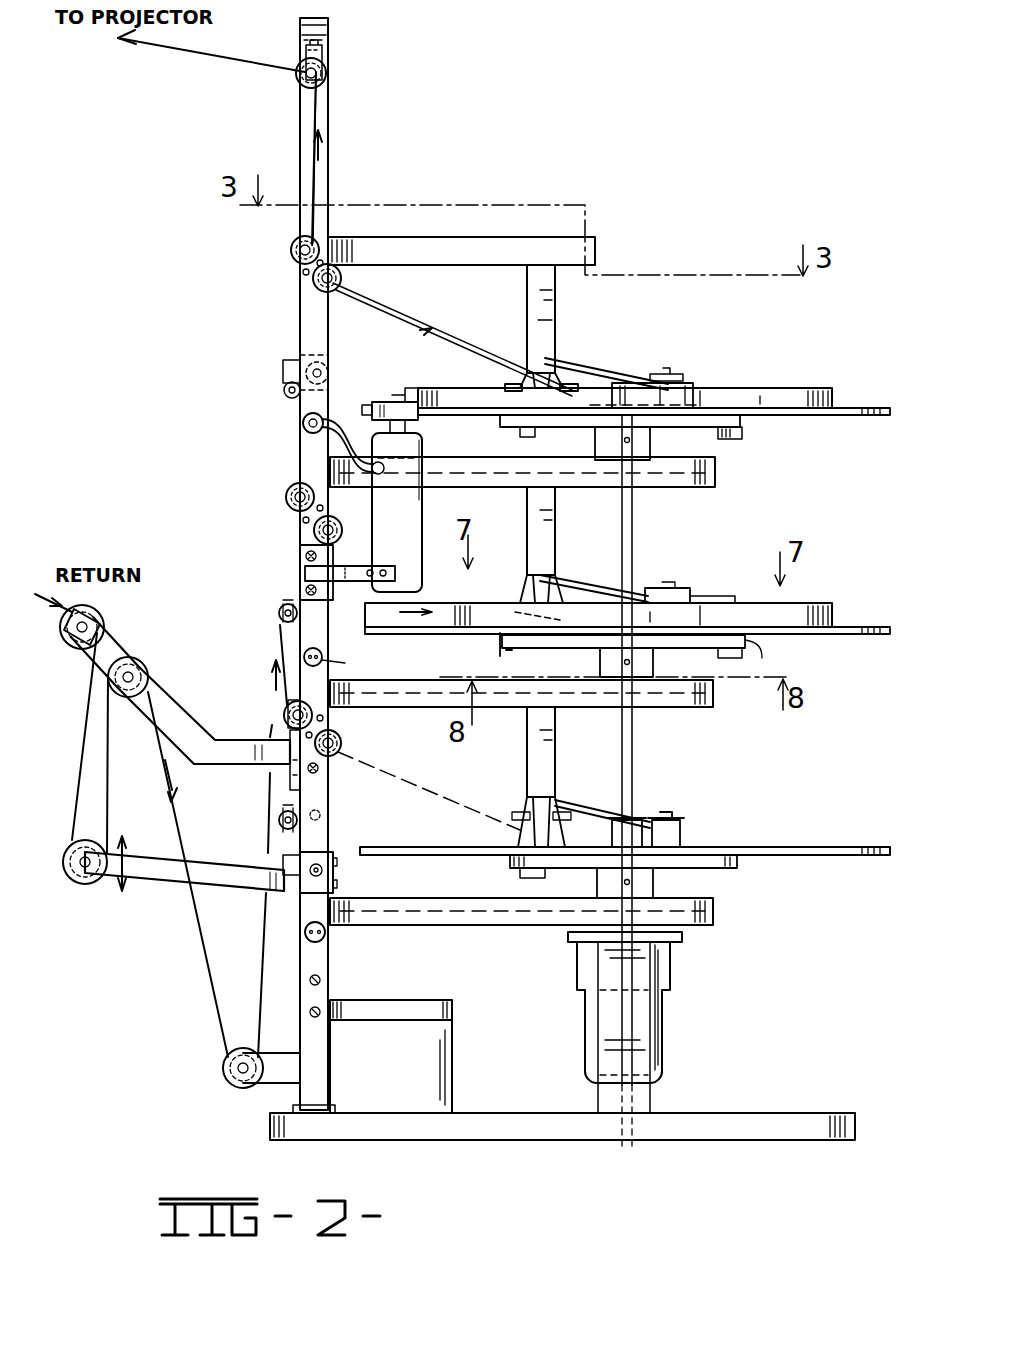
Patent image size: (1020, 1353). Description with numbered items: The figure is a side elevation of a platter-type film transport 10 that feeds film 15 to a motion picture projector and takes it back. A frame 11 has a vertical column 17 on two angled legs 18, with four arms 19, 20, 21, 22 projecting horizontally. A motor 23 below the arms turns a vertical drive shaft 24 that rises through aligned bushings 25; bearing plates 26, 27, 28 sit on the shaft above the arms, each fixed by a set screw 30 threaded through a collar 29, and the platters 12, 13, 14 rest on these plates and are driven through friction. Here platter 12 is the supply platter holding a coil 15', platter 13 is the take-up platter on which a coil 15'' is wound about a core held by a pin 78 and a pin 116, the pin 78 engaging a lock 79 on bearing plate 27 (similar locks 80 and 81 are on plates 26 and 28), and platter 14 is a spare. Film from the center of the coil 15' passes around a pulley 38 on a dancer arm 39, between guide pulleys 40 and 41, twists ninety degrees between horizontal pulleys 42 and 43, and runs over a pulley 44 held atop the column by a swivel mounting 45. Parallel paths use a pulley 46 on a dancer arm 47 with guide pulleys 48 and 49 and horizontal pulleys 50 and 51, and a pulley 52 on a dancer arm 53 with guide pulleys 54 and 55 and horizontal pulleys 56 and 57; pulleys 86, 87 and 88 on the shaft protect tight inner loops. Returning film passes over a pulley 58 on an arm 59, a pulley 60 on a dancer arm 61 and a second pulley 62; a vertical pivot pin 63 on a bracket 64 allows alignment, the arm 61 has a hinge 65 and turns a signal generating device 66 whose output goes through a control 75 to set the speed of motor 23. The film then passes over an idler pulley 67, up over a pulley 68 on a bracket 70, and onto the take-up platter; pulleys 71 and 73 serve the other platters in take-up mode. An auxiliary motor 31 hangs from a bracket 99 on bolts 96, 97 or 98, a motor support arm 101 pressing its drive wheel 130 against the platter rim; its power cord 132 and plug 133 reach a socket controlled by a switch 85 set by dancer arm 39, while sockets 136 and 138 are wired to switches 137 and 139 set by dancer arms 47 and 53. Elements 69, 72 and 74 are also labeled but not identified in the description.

The film transport 10 is at (539, 87).
The frame 11 is at (340, 172).
The platter 12 is at (840, 415).
The platter 13 is at (845, 635).
The platter 14 is at (815, 856).
The film 15 is at (175, 543).
The coil 15' is at (636, 372).
The coil 15'' is at (623, 604).
The column 17 is at (298, 300).
The angled legs 18 is at (505, 1140).
The arm 19 is at (595, 240).
The arm 20 is at (715, 485).
The arm 21 is at (713, 700).
The arm 22 is at (713, 923).
The motor 23 is at (662, 1030).
The vertical drive shaft 24 is at (634, 755).
The bushings 25 is at (630, 468).
The bearing plate 26 is at (516, 430).
The bearing plate 27 is at (548, 650).
The bearing plate 28 is at (732, 868).
The collar 29 is at (652, 442).
The set screw 30 is at (595, 440).
The auxiliary motor 31 is at (422, 492).
The pulley 38 is at (690, 385).
The dancer arm 39 is at (556, 370).
The guide pulley 40 is at (512, 383).
The guide pulley 41 is at (580, 366).
The horizontal pulley 42 is at (342, 281).
The horizontal pulley 43 is at (291, 253).
The pulley 44 is at (300, 85).
The swivel mounting 45 is at (328, 30).
The pulley 46 is at (705, 596).
The dancer arm 47 is at (582, 575).
The guide pulley 48 is at (515, 600).
The guide pulley 49 is at (560, 618).
The horizontal pulley 50 is at (360, 510).
The horizontal pulley 51 is at (285, 490).
The pulley 52 is at (684, 828).
The dancer arm 53 is at (588, 798).
The guide pulley 54 is at (518, 820).
The guide pulley 55 is at (565, 826).
The horizontal pulley 56 is at (341, 735).
The horizontal pulley 57 is at (287, 704).
The pulley 58 is at (100, 615).
The arm 59 is at (225, 765).
The pulley 60 is at (78, 878).
The dancer arm 61 is at (142, 882).
The pulley 62 is at (140, 660).
The vertical pivot pin 63 is at (287, 716).
The bracket 64 is at (290, 780).
The hinge 65 is at (280, 860).
The signal generating device 66 is at (310, 890).
The idler pulley 67 is at (232, 1082).
The pulley 68 is at (280, 608).
The clamp 69 is at (323, 650).
The bracket 70 is at (298, 570).
The pulley 71 is at (284, 396).
The roller 72 is at (330, 368).
The pulley 73 is at (278, 822).
The bolt 74 is at (322, 812).
The control 75 is at (452, 1042).
The pin 78 is at (765, 650).
The lock 79 is at (742, 656).
The lock 80 is at (740, 440).
The lock 81 is at (520, 873).
The switch 85 is at (555, 302).
The pulley 86 is at (645, 375).
The pulley 87 is at (650, 588).
The pulley 88 is at (648, 815).
The pair of bolts 96 is at (305, 552).
The pair of bolts 97 is at (320, 770).
The pair of bolts 98 is at (322, 1010).
The bracket 99 is at (305, 586).
The motor support arm 101 is at (350, 582).
The pin 116 is at (498, 648).
The drive wheel 130 is at (408, 392).
The power cord 132 is at (350, 462).
The plug 133 is at (302, 426).
The socket 136 is at (363, 662).
The switch 137 is at (527, 548).
The socket 138 is at (326, 935).
The switch 139 is at (527, 773).